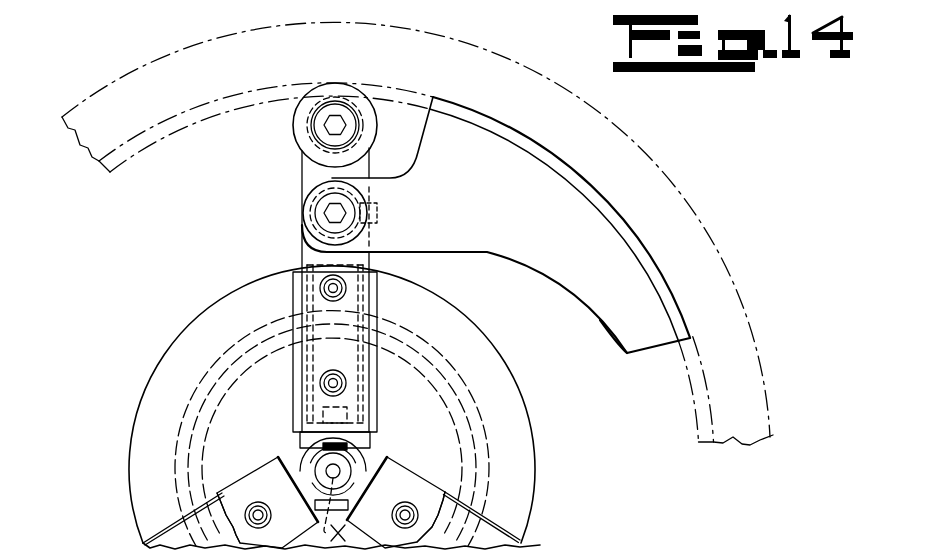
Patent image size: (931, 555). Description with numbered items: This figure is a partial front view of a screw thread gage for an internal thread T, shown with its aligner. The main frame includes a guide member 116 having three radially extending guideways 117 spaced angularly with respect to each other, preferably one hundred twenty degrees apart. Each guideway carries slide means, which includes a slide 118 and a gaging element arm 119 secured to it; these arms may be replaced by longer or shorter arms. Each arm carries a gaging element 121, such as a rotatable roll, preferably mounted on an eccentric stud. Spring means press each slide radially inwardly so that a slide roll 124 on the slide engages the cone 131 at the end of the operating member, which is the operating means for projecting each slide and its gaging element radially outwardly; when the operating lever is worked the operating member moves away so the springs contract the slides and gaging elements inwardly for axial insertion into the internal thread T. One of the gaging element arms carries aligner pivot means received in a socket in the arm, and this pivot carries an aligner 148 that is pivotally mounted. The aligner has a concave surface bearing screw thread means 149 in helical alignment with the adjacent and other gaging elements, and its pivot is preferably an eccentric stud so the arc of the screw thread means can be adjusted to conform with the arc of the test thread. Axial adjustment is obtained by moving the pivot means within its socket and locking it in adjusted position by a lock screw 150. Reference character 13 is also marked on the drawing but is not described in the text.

The clamp block 13 is at (292, 300).
The guide member 116 is at (500, 372).
The guideways 117 is at (150, 530).
The slide 118 is at (180, 532).
The gaging element arm 119 is at (302, 176).
The gaging element 121 is at (340, 83).
The slide roll 124 is at (357, 450).
The cone 131 is at (310, 455).
The aligner 148 is at (628, 345).
The screw thread means 149 is at (553, 160).
The lock screw 150 is at (378, 213).
The internal thread T is at (698, 430).